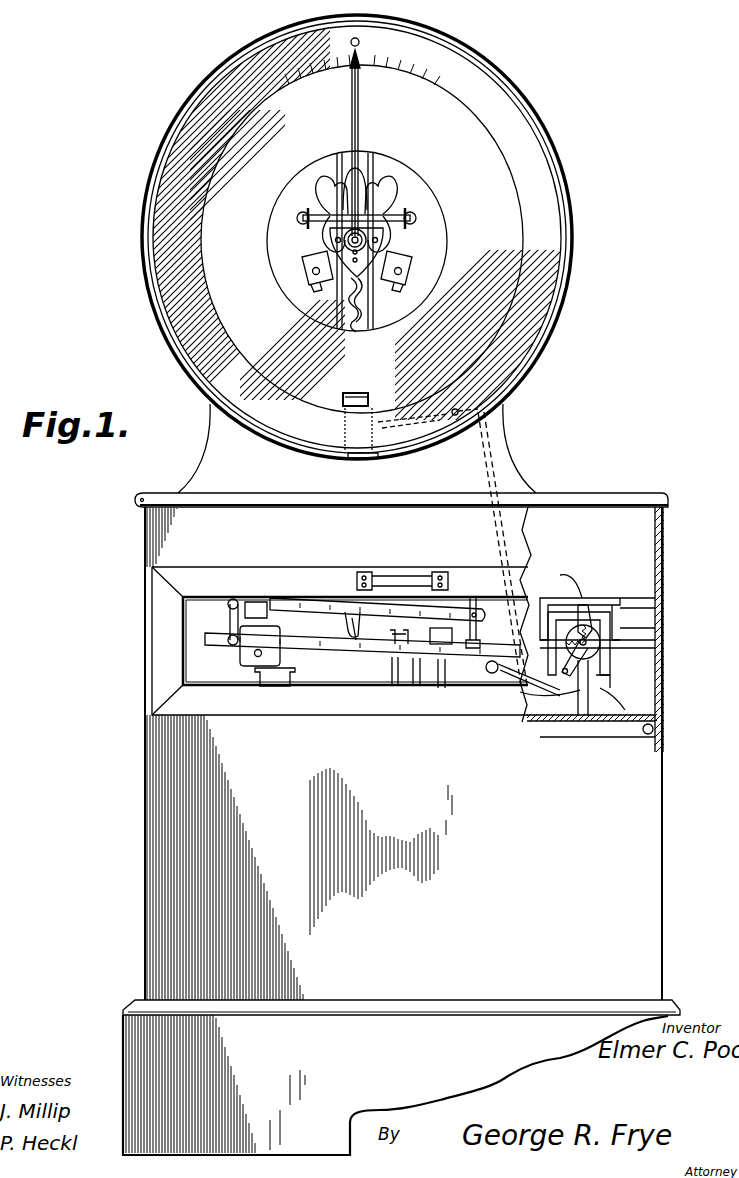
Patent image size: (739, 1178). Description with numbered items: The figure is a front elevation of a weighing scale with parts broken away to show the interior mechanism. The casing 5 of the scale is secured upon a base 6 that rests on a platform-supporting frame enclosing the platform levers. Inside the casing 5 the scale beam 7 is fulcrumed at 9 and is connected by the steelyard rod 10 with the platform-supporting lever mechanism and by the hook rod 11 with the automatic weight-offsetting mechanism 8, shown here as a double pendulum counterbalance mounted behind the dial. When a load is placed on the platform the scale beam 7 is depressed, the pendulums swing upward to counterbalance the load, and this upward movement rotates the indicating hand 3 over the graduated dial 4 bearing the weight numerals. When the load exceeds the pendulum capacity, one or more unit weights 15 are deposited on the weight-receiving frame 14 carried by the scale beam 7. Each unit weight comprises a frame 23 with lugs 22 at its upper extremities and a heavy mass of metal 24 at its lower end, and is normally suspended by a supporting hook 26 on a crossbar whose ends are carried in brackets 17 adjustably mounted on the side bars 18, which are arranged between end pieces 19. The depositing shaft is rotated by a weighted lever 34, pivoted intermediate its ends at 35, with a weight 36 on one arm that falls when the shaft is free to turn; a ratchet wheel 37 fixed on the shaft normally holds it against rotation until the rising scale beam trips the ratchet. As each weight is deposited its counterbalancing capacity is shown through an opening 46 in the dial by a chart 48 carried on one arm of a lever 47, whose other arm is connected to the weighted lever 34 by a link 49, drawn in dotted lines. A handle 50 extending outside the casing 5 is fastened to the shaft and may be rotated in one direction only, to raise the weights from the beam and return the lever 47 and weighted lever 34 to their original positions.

The indicating hand 3 is at (358, 110).
The graduated dial 4 is at (521, 173).
The casing 5 is at (166, 529).
The base 6 is at (143, 1032).
The scale beam 7 is at (215, 630).
The automatic weight-offsetting mechanism 8 is at (385, 246).
The fulcrum 9 is at (470, 660).
The steelyard rod 10 is at (398, 672).
The hook rod 11 is at (350, 612).
The weight-receiving frame 14 is at (548, 630).
The unit weights 15 is at (595, 683).
The brackets 17 is at (585, 600).
The side bars 18 is at (595, 605).
The end pieces 19 is at (626, 628).
The lugs 22 is at (618, 607).
The frame 23 is at (596, 667).
The heavy masses of metal 24 is at (632, 717).
The supporting hook 26 is at (562, 573).
The weighted lever 34 is at (495, 675).
The pivot 35 is at (588, 700).
The weight 36 is at (487, 676).
The ratchet wheel 37 is at (602, 648).
The opening 46 is at (372, 398).
The lever 47 is at (490, 418).
The chart 48 is at (343, 436).
The link 49 is at (504, 545).
The handle 50 is at (615, 705).